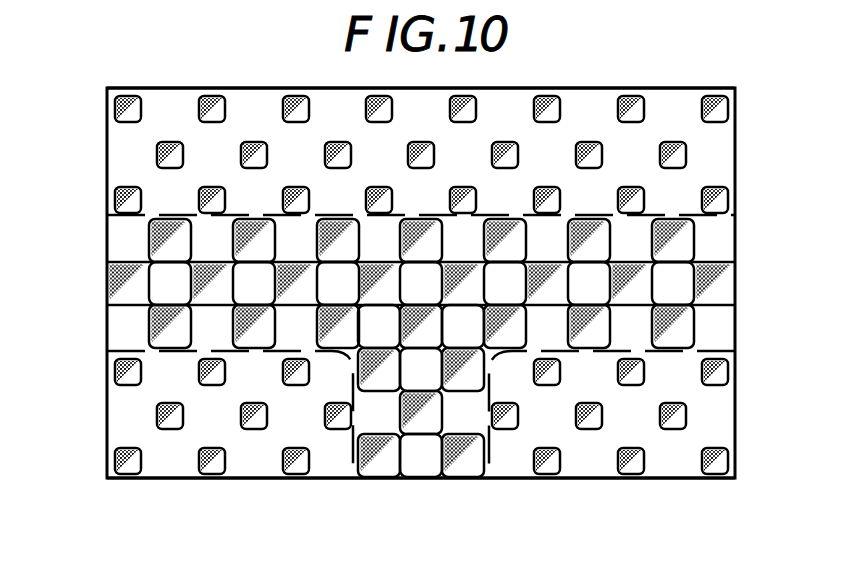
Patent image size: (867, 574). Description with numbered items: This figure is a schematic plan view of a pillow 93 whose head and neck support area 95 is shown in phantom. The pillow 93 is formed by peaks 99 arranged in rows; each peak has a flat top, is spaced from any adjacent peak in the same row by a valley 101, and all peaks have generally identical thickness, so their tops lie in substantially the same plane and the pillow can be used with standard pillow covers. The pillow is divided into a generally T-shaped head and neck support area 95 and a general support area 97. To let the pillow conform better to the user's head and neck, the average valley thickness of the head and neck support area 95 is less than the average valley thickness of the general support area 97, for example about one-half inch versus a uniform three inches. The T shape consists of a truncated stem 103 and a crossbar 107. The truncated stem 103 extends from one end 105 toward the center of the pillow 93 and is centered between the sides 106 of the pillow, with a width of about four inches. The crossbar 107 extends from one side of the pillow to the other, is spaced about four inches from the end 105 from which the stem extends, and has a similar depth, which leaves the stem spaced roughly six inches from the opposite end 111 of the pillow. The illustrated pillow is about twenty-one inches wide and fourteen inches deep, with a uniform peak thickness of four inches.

The pillow 93 is at (739, 176).
The head and neck support area 95 is at (718, 250).
The general support area 97 is at (688, 87).
The peaks 99 is at (178, 118).
The valley 101 is at (134, 108).
The truncated stem 103 is at (425, 470).
The end 105 is at (580, 479).
The sides 106 is at (737, 416).
The crossbar 107 is at (298, 238).
The opposite end 111 is at (614, 86).